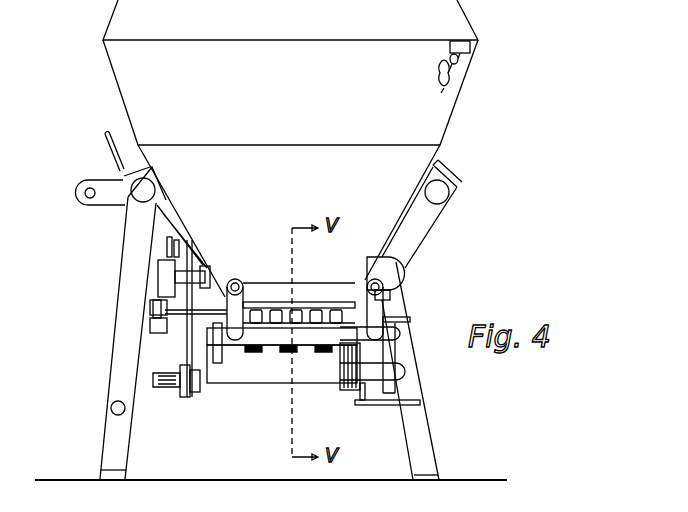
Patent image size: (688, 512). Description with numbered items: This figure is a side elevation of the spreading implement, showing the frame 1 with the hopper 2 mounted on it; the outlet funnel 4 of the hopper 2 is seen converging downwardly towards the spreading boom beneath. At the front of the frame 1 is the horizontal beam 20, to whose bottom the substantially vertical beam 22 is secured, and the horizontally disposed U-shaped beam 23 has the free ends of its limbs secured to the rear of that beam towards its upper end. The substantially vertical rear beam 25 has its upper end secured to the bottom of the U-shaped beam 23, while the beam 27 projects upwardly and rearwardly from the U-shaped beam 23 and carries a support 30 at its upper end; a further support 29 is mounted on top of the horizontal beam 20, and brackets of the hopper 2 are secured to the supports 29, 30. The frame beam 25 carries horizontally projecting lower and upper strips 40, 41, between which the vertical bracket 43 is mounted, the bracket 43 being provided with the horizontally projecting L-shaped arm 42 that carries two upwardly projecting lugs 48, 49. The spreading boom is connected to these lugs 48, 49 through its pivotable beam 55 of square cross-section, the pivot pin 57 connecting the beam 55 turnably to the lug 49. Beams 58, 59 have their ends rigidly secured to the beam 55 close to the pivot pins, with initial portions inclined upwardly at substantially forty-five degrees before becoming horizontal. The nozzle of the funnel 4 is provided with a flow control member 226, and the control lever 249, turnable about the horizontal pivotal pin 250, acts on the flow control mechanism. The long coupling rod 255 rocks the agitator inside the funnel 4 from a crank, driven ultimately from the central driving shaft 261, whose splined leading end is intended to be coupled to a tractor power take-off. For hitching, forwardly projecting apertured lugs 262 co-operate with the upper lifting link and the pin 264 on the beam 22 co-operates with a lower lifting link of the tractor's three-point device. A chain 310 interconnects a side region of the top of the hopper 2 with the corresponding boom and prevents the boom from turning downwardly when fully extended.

The frame 1 is at (110, 353).
The hopper 2 is at (115, 15).
The outlet funnel 4 is at (264, 159).
The horizontal beam 20 is at (148, 190).
The beam 22 is at (103, 445).
The U-shaped beam 23 is at (398, 273).
The vertical beam 25 is at (422, 432).
The beam 27 is at (430, 223).
The support 29 is at (128, 193).
The support 30 is at (453, 193).
The lower strip 40 is at (393, 410).
The upper strip 41 is at (403, 293).
The horizontally projecting arm 42 is at (238, 377).
The vertical bracket 43 is at (413, 317).
The lug 48 is at (190, 395).
The lug 49 is at (402, 357).
The pivotable beam 55 is at (347, 343).
The pivot pin 57 is at (398, 335).
The beam 58 is at (237, 280).
The beam 59 is at (368, 278).
The flow control member 226 is at (263, 300).
The control lever 249 is at (107, 140).
The horizontal pivotal pin 250 is at (167, 247).
The coupling rod 255 is at (150, 320).
The driving shaft 261 is at (165, 377).
The apertured lugs 262 is at (77, 190).
The pin 264 is at (111, 410).
The chain 310 is at (435, 90).